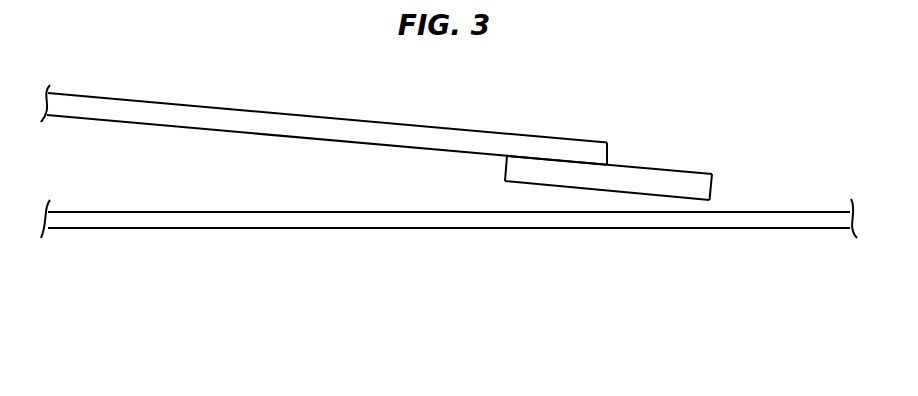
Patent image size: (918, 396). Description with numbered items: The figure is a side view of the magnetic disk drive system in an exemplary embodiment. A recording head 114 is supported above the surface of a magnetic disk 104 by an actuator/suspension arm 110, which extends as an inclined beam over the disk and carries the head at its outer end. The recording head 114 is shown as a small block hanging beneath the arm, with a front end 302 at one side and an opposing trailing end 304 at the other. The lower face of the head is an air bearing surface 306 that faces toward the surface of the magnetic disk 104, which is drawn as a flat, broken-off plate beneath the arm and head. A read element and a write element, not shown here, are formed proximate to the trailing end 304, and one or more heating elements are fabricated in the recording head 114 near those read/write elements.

The magnetic disk 104 is at (438, 222).
The actuator/suspension arm 110 is at (273, 113).
The recording head 114 is at (655, 172).
The front end 302 is at (490, 168).
The trailing end 304 is at (729, 181).
The air bearing surface 306 is at (558, 192).